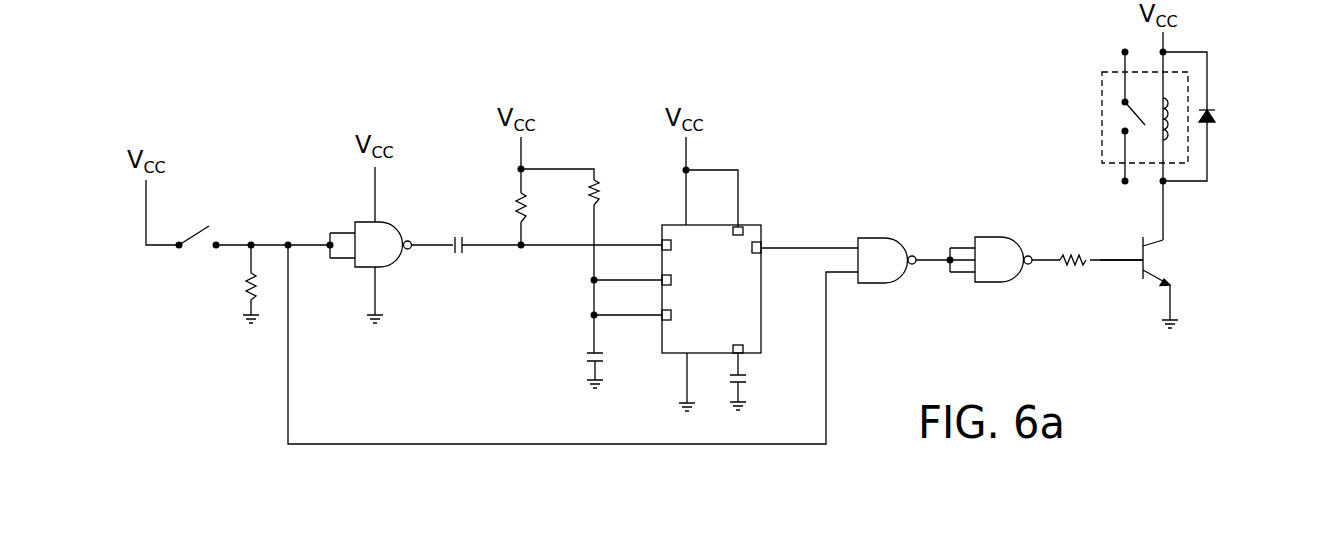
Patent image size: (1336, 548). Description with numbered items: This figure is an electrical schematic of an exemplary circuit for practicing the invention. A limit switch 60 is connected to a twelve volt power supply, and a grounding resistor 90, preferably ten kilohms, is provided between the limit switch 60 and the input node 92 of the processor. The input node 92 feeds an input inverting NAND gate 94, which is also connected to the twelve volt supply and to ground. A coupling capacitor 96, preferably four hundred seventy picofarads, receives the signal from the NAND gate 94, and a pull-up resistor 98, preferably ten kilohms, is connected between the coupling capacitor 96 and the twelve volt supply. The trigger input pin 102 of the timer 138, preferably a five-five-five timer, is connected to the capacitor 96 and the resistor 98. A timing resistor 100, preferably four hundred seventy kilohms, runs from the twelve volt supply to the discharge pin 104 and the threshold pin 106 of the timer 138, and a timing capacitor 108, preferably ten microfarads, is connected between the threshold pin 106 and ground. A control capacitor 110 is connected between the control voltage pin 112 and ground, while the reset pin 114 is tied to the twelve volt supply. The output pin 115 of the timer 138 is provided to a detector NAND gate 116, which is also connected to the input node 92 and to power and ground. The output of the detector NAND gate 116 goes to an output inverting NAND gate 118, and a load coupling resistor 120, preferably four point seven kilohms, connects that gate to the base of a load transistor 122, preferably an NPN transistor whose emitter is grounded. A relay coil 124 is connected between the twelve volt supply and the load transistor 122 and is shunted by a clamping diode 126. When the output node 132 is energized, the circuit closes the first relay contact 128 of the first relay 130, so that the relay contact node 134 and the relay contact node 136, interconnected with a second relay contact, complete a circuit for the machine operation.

The limit switch 60 is at (196, 226).
The grounding resistor 90 is at (246, 293).
The input node 92 is at (289, 245).
The input inverting NAND gate 94 is at (361, 268).
The coupling capacitor 96 is at (467, 250).
The pull-up resistor 98 is at (517, 207).
The timing resistor 100 is at (597, 185).
The trigger input pin 102 is at (662, 242).
The discharge pin 104 is at (662, 278).
The threshold pin 106 is at (662, 318).
The timing capacitor 108 is at (587, 363).
The control capacitor 110 is at (747, 380).
The control voltage pin 112 is at (745, 345).
The reset pin 114 is at (740, 227).
The output pin 115 is at (761, 247).
The detector NAND gate 116 is at (877, 284).
The output inverting NAND gate 118 is at (993, 283).
The load coupling resistor 120 is at (1070, 265).
The load transistor 122 is at (1143, 243).
The relay coil 124 is at (1165, 100).
The clamping diode 126 is at (1210, 122).
The first relay contact 128 is at (1128, 117).
The first relay 130 is at (1102, 90).
The output node 132 is at (1116, 262).
The relay contact node 134 is at (1123, 52).
The relay contact node 136 is at (1122, 181).
The timer 138 is at (712, 337).